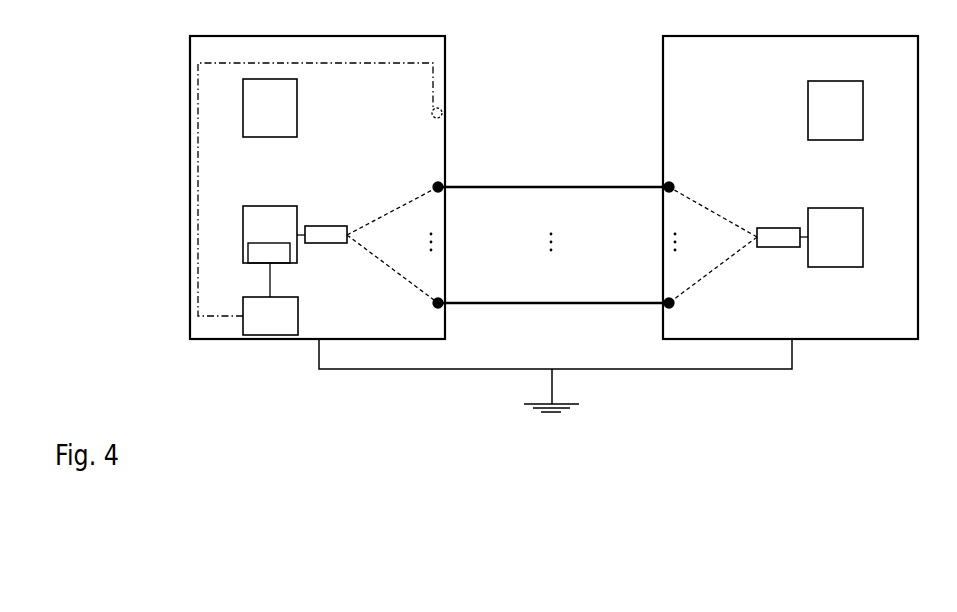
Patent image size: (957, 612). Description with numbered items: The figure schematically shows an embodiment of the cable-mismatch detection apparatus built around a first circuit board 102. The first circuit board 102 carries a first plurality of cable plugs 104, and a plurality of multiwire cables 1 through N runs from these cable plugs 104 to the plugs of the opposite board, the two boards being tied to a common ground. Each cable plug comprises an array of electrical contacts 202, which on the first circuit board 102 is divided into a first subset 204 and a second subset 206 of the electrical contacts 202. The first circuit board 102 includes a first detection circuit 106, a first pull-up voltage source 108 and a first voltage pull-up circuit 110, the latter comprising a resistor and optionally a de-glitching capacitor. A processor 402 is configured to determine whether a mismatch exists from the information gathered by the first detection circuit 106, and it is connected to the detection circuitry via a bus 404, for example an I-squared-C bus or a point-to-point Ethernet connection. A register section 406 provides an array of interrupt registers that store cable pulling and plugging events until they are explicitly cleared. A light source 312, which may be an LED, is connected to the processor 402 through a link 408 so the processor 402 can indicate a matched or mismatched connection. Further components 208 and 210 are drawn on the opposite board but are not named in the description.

The first circuit board 102 is at (192, 58).
The cable plugs 104 is at (447, 190).
The first detection circuit 106 is at (293, 112).
The first pull-up voltage source 108 is at (251, 233).
The first voltage pull-up circuit 110 is at (328, 238).
The array of electrical contacts 202 is at (663, 58).
The first subset of the electrical contacts 204 is at (665, 183).
The second subset of the electrical contacts 206 is at (812, 110).
The receiving unit 208 is at (857, 255).
The receiver 210 is at (776, 245).
The light source 312 is at (445, 118).
The processor 402 is at (252, 304).
The bus 404 is at (273, 282).
The register section 406 is at (258, 258).
The link 408 is at (338, 67).
The multiwire cable 1 is at (560, 187).
The multiwire cable N is at (567, 302).